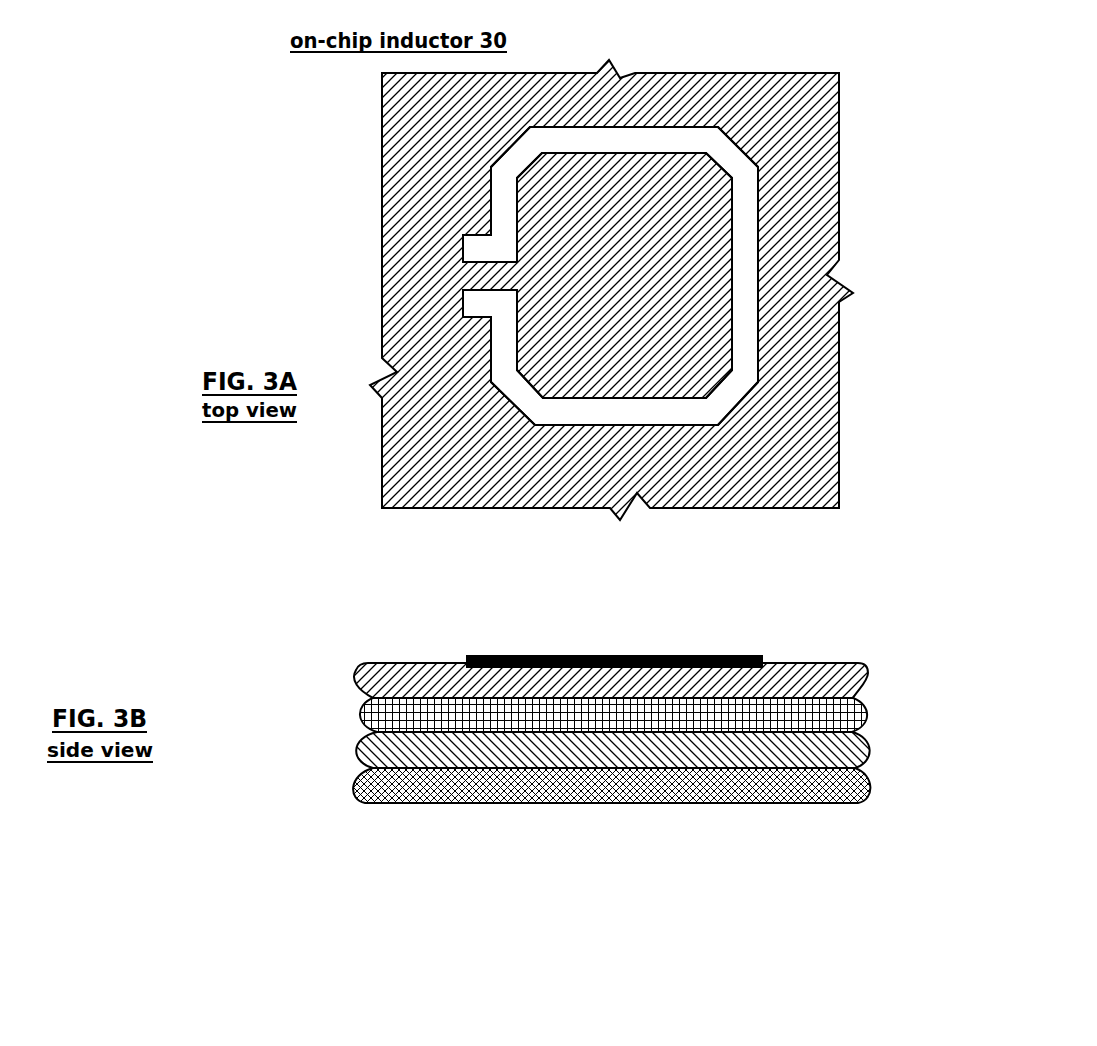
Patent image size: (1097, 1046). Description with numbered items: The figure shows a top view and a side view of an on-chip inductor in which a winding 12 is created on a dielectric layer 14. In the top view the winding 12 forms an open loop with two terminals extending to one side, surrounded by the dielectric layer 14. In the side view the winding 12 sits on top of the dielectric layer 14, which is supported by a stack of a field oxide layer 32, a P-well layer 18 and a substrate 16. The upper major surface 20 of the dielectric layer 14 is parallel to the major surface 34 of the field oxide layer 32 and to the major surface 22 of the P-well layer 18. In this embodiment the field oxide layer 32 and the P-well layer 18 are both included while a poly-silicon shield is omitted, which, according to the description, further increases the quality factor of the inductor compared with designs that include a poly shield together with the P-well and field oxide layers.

In FIG. 3A, the winding 12 is at (745, 235).
In FIG. 3B, the winding 12 is at (575, 652).
In FIG. 3A, the dielectric layer 14 is at (770, 449).
In FIG. 3B, the dielectric layer 14 is at (858, 623).
In FIG. 3B, the major surface 20 is at (417, 663).
In FIG. 3B, the major surface 34 is at (400, 700).
In FIG. 3B, the major surface 22 is at (397, 730).
In FIG. 3B, the field oxide layer 32 is at (877, 715).
In FIG. 3B, the P-well layer 18 is at (877, 750).
In FIG. 3B, the substrate 16 is at (822, 803).